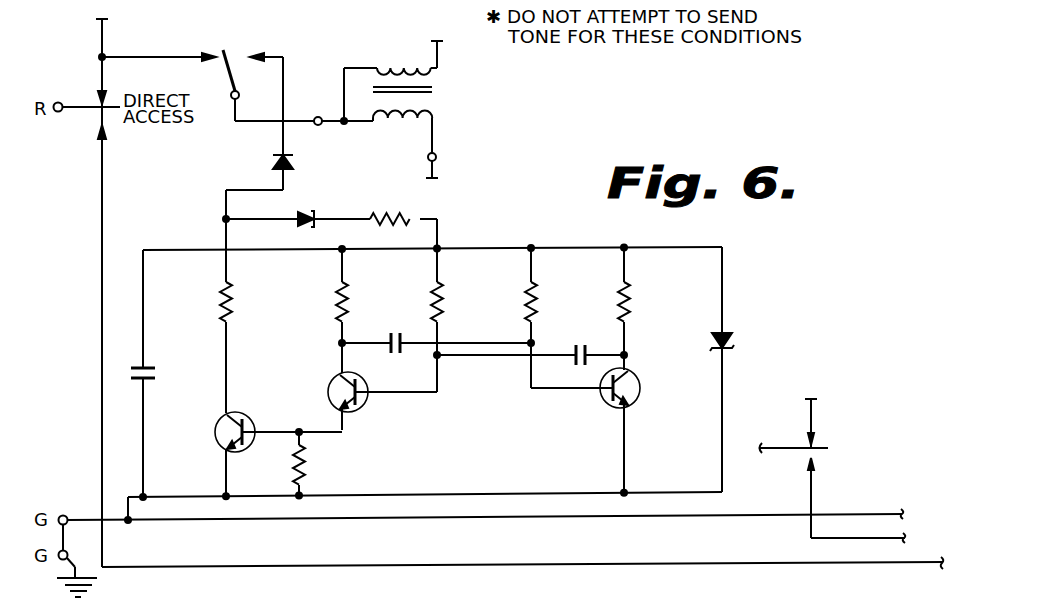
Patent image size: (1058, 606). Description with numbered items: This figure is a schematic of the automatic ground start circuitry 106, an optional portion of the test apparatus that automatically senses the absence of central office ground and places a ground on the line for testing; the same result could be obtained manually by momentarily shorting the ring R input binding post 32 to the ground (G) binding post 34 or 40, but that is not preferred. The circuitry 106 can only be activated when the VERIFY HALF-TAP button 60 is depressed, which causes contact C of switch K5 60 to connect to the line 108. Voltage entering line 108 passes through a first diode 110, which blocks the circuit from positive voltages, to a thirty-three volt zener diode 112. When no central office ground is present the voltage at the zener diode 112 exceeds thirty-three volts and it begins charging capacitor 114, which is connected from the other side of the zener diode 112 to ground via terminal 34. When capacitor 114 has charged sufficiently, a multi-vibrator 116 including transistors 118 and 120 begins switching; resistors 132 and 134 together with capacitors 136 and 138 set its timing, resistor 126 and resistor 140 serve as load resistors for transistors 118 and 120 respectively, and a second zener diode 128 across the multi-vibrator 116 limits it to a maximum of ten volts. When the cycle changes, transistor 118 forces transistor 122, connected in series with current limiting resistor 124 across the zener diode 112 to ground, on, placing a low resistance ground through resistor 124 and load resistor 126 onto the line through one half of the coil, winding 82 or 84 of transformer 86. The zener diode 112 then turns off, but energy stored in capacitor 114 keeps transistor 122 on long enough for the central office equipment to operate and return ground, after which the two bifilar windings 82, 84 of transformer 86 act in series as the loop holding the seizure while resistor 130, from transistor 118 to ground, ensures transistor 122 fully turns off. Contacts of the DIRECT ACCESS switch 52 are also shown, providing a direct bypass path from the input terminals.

The ring R input binding post 32 is at (60, 104).
The DIRECT ACCESS switch K1 52 is at (88, 126).
The line 108 is at (313, 78).
The first diode 110 is at (272, 158).
The winding 82 is at (402, 65).
The winding 84 is at (408, 112).
The transformer T1 86 is at (440, 91).
The ground start circuitry 106 is at (486, 229).
The zener diode 112 is at (305, 232).
The capacitor 114 is at (172, 375).
The multi-vibrator 116 is at (480, 393).
The transistor 118 is at (365, 411).
The transistor 120 is at (643, 392).
The transistor 122 is at (250, 414).
The current limiting resistor 124 is at (233, 303).
The load resistor 126 is at (341, 274).
The second zener diode 128 is at (731, 334).
The resistor 130 is at (308, 473).
The resistor 132 is at (434, 280).
The resistor 134 is at (536, 288).
The capacitor 136 is at (397, 360).
The capacitor 138 is at (590, 350).
The load resistor 140 is at (632, 308).
The VERIFY HALF-TAP button (switch K5) 60 is at (828, 427).
The ground (G) binding post 34 is at (62, 510).
The ground (G) binding post 40 is at (72, 552).